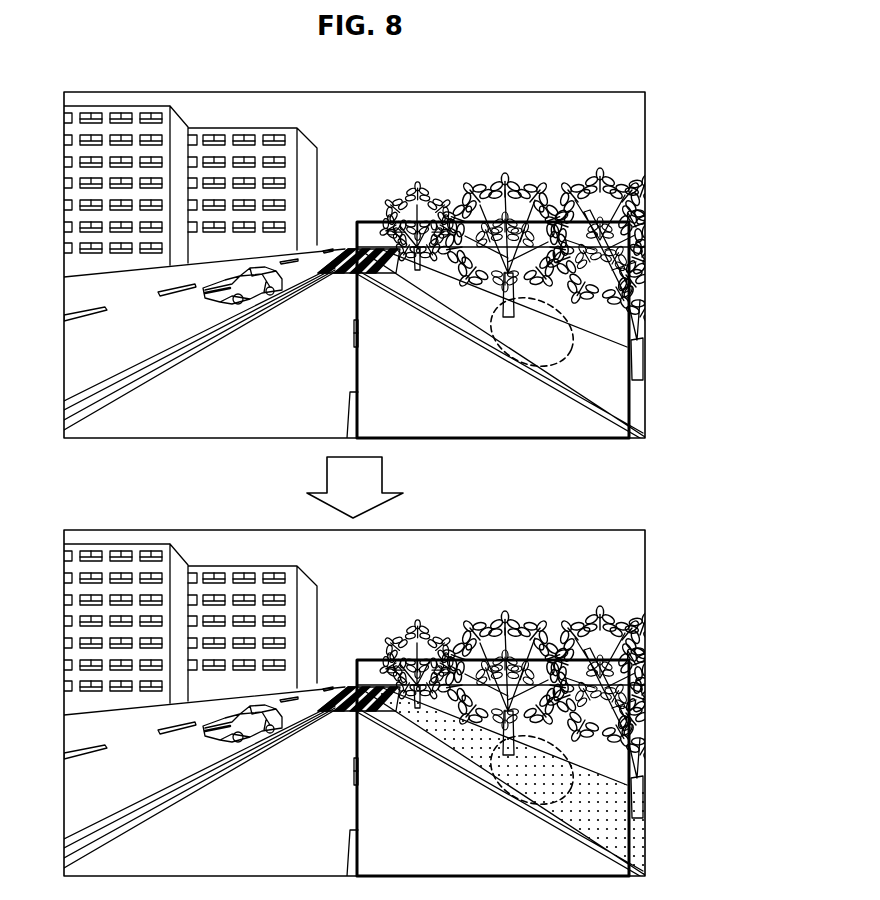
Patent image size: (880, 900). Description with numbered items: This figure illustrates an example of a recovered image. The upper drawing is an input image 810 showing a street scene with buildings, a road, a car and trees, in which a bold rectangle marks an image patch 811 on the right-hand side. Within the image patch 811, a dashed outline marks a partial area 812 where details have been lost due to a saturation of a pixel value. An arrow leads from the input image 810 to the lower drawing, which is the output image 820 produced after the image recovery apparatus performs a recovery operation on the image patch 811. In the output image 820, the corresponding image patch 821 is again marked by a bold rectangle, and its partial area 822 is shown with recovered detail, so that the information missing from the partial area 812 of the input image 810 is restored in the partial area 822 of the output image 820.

The input image 810 is at (645, 123).
The image patch 811 is at (630, 222).
The partial area 812 is at (577, 343).
The output image 820 is at (645, 561).
The image patch 821 is at (630, 660).
The partial area 822 is at (577, 781).